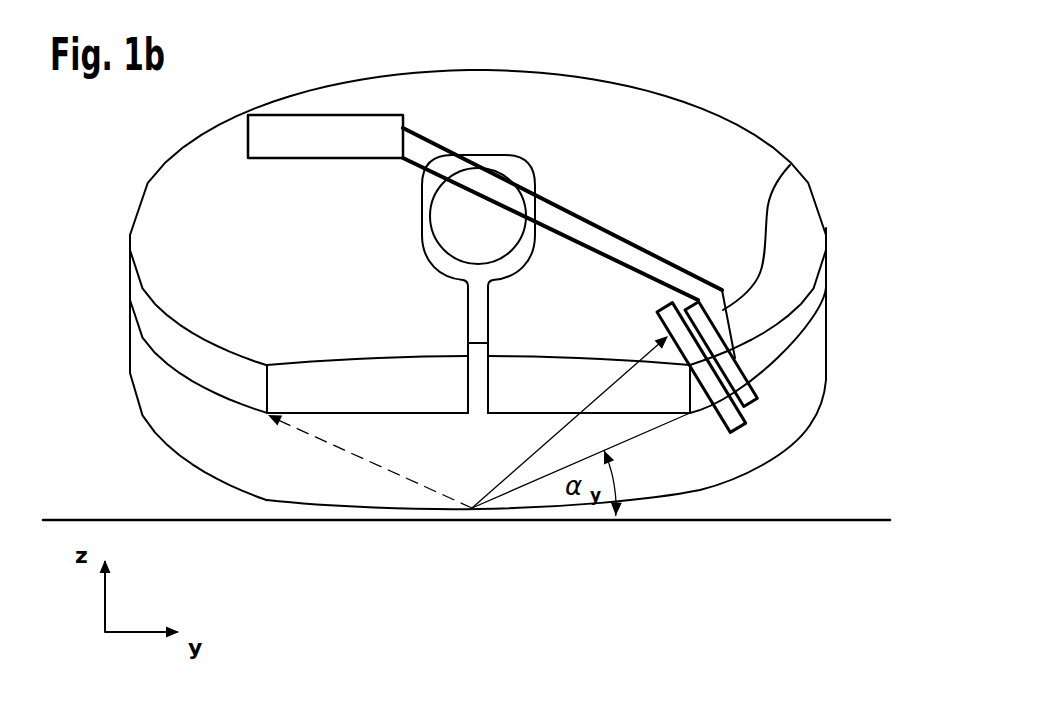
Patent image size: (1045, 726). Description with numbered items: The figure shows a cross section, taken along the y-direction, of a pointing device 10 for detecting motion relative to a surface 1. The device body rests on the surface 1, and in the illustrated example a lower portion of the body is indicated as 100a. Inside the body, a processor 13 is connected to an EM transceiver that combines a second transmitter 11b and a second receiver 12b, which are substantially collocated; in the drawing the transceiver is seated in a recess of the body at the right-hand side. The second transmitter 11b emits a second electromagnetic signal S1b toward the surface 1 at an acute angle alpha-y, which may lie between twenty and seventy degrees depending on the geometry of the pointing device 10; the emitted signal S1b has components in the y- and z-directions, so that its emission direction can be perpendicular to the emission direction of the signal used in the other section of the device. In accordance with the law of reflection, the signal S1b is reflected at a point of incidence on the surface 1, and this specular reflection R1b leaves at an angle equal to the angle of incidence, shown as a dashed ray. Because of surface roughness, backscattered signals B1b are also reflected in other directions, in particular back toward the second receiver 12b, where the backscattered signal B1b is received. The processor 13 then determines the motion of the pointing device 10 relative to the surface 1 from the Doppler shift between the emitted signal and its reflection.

The surface 1 is at (82, 519).
The pointing device 10 is at (798, 96).
The second transmitter 11b is at (755, 412).
The second receiver 12b is at (790, 165).
The processor 13 is at (285, 115).
The lower body layer 100a is at (842, 280).
The backscattered signal B1b is at (533, 457).
The second electromagnetic signal S1b is at (660, 425).
The reflected beam R1b is at (323, 442).